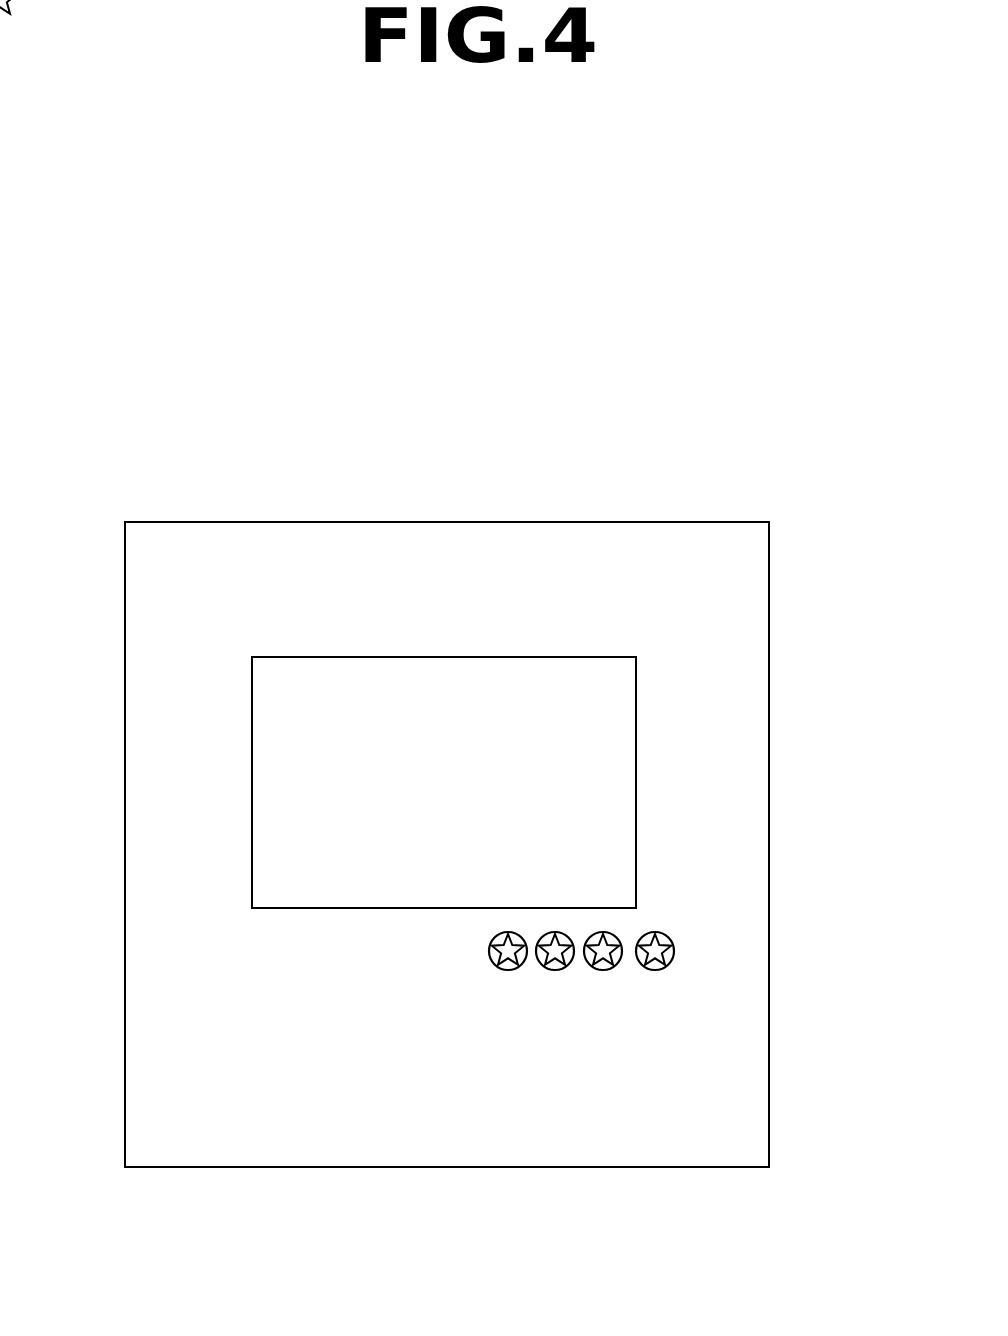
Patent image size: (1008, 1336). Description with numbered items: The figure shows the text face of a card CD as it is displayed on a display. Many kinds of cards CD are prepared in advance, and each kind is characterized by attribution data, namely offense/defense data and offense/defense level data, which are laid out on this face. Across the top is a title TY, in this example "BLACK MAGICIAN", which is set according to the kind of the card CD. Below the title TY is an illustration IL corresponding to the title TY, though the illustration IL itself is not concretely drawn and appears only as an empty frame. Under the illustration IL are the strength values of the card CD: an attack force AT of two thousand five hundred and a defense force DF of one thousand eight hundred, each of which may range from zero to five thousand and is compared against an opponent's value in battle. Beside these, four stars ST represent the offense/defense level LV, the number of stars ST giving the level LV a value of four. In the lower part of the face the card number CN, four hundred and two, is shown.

The card CD is at (393, 330).
The title TY is at (420, 556).
The illustration IL is at (608, 773).
The offense/defense level LV is at (676, 939).
The stars ST is at (653, 976).
The attack force AT is at (316, 1008).
The defense force DF is at (351, 1115).
The card number CN is at (727, 1080).